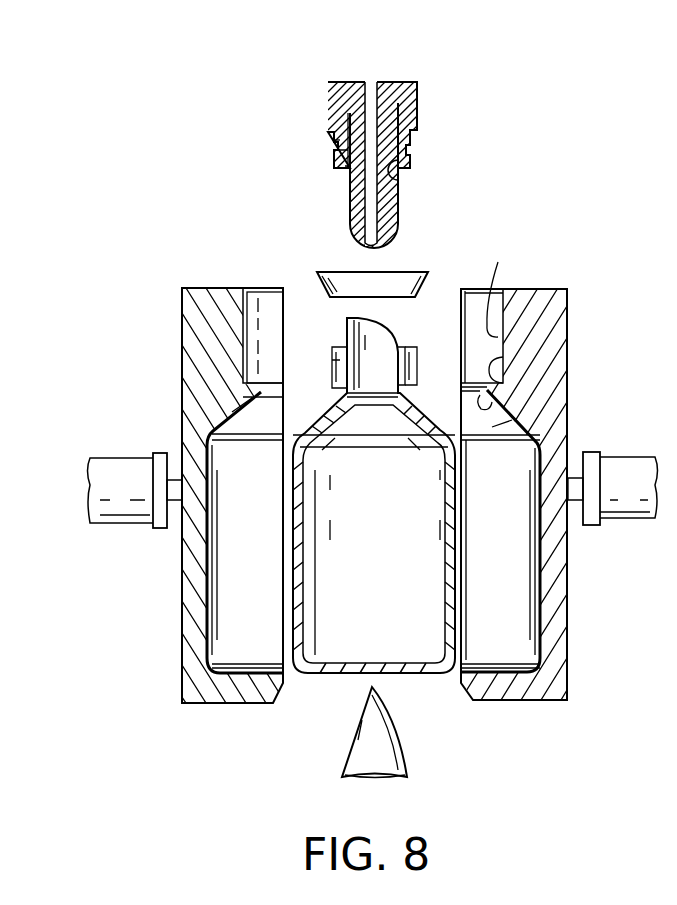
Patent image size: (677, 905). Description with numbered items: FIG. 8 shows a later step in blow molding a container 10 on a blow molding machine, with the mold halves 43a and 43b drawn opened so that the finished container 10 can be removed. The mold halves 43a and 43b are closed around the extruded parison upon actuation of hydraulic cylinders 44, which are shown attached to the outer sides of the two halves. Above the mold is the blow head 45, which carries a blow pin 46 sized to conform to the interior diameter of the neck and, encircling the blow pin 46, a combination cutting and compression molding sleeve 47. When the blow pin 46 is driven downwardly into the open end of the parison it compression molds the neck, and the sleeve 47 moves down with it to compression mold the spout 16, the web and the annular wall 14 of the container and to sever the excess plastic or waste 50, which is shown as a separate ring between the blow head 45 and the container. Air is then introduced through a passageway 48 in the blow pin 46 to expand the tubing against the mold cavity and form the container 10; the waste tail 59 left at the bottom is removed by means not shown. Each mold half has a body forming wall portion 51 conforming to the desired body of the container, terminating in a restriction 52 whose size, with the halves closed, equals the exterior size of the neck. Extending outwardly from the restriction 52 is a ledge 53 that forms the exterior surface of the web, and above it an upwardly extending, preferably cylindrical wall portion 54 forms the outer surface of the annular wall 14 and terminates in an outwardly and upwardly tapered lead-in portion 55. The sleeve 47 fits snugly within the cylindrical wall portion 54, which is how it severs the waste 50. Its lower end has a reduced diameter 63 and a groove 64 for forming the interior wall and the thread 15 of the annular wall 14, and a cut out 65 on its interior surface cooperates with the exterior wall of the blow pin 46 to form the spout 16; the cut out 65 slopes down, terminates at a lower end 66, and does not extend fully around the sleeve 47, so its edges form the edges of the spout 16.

The container 10 is at (403, 675).
The annular wall 14 is at (417, 360).
The thread 15 is at (399, 350).
The spout 16 is at (347, 330).
The mold half 43a is at (195, 406).
The mold half 43b is at (560, 417).
The hydraulic cylinder 44 is at (105, 508).
The blow head 45 is at (376, 133).
The blow pin 46 is at (350, 207).
The cutting and compression molding sleeve 47 is at (410, 107).
The passageway 48 is at (373, 87).
The waste 50 is at (425, 272).
The body forming wall portion 51 is at (527, 576).
The restriction 52 is at (485, 397).
The ledge 53 is at (495, 365).
The upwardly extending wall portion 54 is at (492, 306).
The lead-in portion 55 is at (258, 289).
The waste tail 59 is at (353, 750).
The reduced diameter 63 is at (336, 163).
The groove 64 is at (334, 143).
The cut out 65 is at (350, 170).
The lower end 66 is at (398, 183).